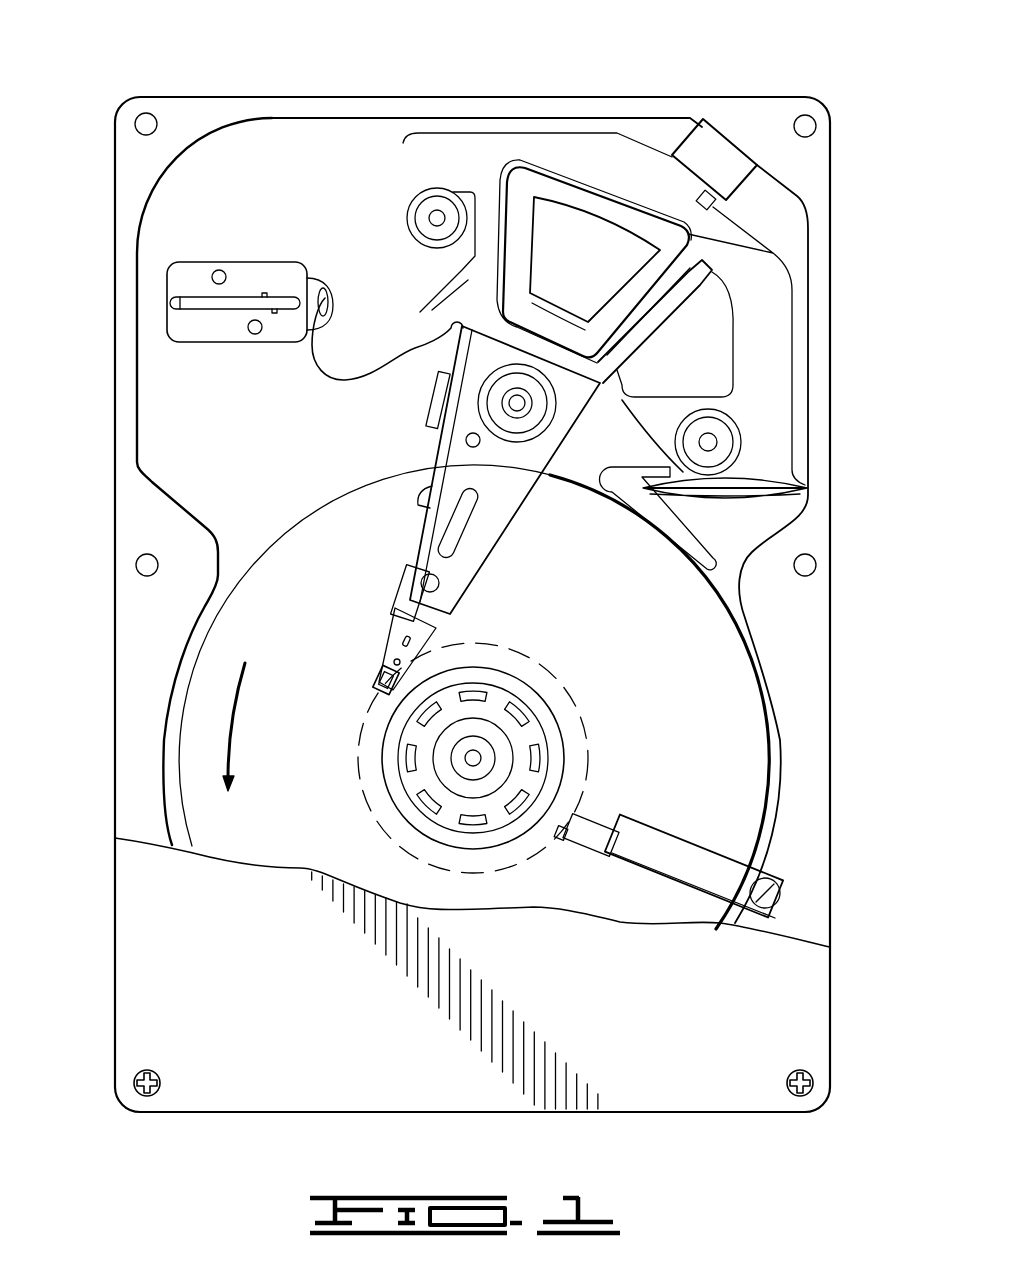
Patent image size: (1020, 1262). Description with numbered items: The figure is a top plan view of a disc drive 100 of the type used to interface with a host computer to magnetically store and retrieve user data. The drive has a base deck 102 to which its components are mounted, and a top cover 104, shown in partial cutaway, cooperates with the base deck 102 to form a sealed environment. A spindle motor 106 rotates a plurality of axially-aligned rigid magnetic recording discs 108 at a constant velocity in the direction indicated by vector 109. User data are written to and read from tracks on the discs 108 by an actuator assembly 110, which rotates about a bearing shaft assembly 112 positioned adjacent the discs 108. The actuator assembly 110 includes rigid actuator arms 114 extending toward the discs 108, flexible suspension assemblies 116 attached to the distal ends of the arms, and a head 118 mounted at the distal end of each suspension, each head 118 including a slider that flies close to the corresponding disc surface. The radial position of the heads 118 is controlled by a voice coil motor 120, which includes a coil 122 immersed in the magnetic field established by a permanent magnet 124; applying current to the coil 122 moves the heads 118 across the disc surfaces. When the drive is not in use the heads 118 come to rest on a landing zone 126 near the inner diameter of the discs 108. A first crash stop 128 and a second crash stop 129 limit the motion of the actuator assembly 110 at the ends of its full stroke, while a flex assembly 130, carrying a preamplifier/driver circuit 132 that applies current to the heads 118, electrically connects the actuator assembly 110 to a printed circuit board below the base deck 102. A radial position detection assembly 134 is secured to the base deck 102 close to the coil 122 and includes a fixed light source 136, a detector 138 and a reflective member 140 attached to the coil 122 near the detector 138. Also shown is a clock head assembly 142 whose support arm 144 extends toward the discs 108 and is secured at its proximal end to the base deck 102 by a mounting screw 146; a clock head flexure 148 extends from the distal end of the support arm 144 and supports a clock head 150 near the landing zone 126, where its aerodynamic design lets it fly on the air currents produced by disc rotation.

The disc drive 100 is at (222, 55).
The base deck 102 is at (170, 418).
The top cover 104 is at (162, 915).
The spindle motor 106 is at (523, 738).
The magnetic recording discs 108 is at (740, 772).
The vector 109 is at (229, 715).
The actuator assembly 110 is at (487, 485).
The bearing shaft assembly 112 is at (522, 410).
The actuator arms 114 is at (472, 532).
The flexible suspension assemblies 116 is at (405, 640).
The head 118 is at (380, 672).
The voice coil motor 120 is at (513, 83).
The coil 122 is at (648, 287).
The permanent magnet 124 is at (695, 345).
The landing zone 126 is at (560, 676).
The first crash stop 128 is at (415, 218).
The second crash stop 129 is at (712, 425).
The flex assembly 130 is at (358, 362).
The preamplifier/driver circuit 132 is at (432, 395).
The radial position detection assembly 134 is at (772, 130).
The fixed light source 136 is at (715, 125).
The detector 138 is at (718, 208).
The reflective member 140 is at (686, 233).
The clock head assembly 142 is at (700, 900).
The support arm 144 is at (683, 862).
The mounting screw 146 is at (770, 872).
The clock head flexure 148 is at (595, 820).
The clock head 150 is at (548, 833).